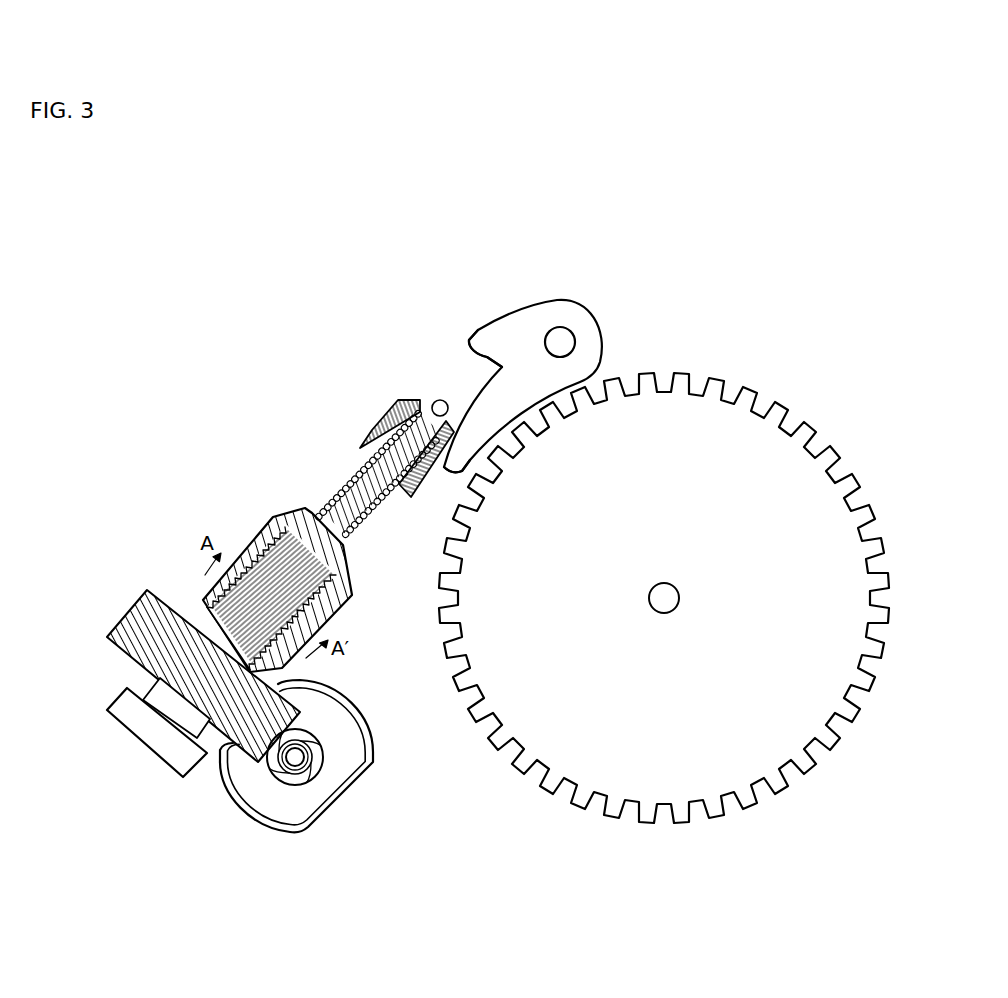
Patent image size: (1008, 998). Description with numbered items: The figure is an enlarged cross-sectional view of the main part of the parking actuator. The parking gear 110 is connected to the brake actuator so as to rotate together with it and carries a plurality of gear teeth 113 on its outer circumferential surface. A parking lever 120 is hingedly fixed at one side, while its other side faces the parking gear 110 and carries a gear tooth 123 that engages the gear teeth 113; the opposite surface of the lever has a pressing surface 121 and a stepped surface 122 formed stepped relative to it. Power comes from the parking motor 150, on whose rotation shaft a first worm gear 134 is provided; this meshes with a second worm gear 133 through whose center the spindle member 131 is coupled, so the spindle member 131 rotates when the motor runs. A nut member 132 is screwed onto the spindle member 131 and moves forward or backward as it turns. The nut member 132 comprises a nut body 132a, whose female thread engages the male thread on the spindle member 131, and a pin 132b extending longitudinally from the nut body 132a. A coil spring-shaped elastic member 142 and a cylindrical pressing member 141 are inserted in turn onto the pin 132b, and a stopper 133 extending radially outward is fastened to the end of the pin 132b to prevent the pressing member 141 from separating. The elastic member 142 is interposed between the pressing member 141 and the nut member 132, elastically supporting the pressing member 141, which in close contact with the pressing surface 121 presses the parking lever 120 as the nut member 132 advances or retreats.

The parking gear 110 is at (664, 624).
The gear teeth 113 is at (541, 776).
The parking lever 120 is at (500, 386).
The pressing surface 121 is at (446, 400).
The stepped surface 122 is at (483, 357).
The gear tooth 123 is at (460, 473).
The spindle member 131 is at (205, 633).
The nut member 132 is at (250, 557).
The nut body 132a is at (343, 598).
The pin 132b is at (315, 512).
The stopper 133 is at (218, 738).
The first worm gear 134 is at (327, 774).
The pressing member 141 is at (377, 430).
The elastic member 142 is at (352, 473).
The parking motor 150 is at (290, 813).